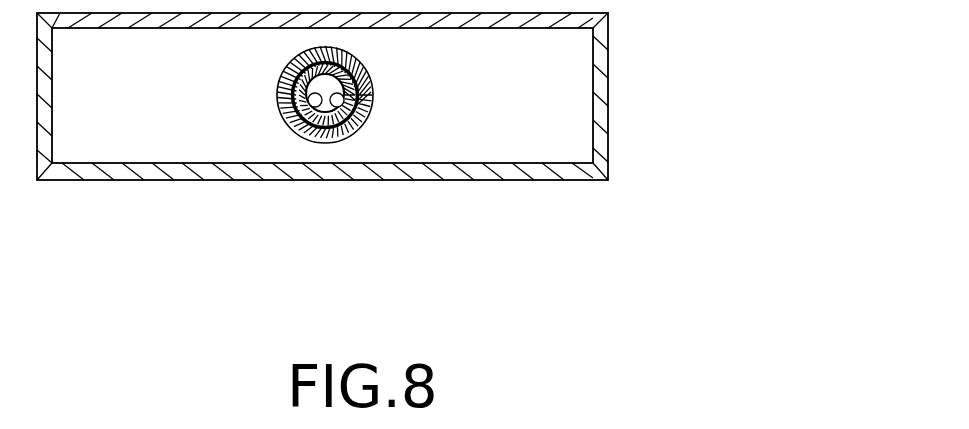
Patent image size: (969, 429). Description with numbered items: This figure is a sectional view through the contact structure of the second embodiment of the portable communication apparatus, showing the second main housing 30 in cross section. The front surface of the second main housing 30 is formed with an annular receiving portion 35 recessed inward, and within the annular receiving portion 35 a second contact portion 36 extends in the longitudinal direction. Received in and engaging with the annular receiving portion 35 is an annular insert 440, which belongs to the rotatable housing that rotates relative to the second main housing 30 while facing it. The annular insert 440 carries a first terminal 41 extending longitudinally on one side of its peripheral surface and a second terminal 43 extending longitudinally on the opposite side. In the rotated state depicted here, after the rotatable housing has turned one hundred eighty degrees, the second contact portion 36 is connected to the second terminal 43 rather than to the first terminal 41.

The second main housing 30 is at (610, 106).
The annular receiving portion 35 is at (339, 168).
The second contact portion 36 is at (283, 86).
The first terminal 41 is at (281, 177).
The second terminal 43 is at (273, 157).
The annular insert 440 is at (332, 168).